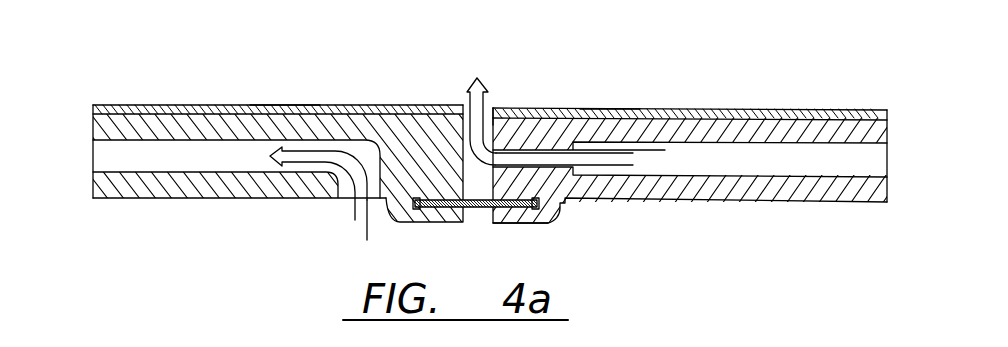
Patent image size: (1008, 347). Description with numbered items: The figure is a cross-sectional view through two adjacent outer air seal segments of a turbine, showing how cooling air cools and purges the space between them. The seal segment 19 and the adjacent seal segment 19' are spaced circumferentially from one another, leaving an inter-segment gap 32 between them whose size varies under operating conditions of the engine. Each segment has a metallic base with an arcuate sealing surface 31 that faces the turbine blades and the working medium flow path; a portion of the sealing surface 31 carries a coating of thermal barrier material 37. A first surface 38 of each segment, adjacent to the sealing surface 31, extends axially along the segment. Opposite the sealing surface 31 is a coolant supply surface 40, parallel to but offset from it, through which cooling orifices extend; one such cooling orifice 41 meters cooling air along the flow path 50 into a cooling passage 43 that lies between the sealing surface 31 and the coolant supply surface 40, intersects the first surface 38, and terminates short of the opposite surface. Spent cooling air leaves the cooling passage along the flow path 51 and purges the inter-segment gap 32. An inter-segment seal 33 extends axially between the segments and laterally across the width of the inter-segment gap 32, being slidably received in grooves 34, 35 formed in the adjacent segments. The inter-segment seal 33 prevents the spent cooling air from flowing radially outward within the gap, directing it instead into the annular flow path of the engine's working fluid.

The adjacent seal segment 19' is at (290, 138).
The thermal barrier material 37 is at (170, 112).
The sealing surface 31 is at (285, 105).
The inter-segment gap 32 is at (468, 108).
The first surface 38 is at (486, 110).
The cooling passage 43 is at (785, 153).
The outer air seal segment 19 is at (701, 130).
The coolant supply surface 40 is at (157, 198).
The flow path of cooling air entering 50 is at (355, 207).
The cooling orifice 41 is at (342, 234).
The groove 34 is at (380, 198).
The inter-segment seal 33 is at (480, 207).
The groove 35 is at (555, 220).
The flow path of spent cooling air 51 is at (610, 160).